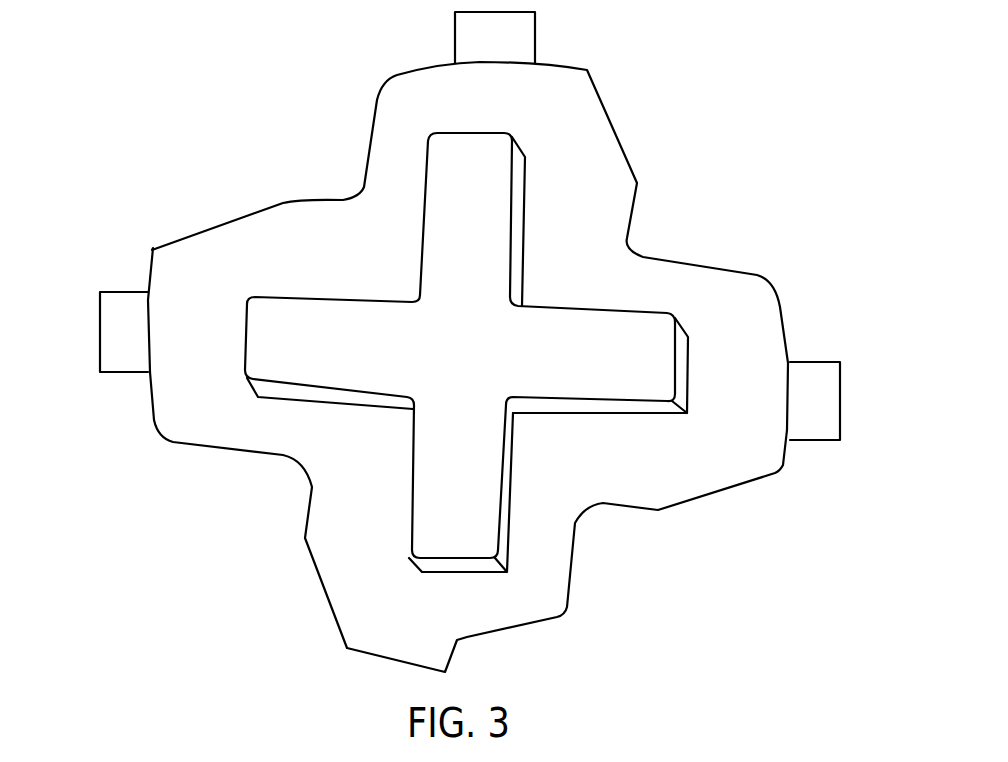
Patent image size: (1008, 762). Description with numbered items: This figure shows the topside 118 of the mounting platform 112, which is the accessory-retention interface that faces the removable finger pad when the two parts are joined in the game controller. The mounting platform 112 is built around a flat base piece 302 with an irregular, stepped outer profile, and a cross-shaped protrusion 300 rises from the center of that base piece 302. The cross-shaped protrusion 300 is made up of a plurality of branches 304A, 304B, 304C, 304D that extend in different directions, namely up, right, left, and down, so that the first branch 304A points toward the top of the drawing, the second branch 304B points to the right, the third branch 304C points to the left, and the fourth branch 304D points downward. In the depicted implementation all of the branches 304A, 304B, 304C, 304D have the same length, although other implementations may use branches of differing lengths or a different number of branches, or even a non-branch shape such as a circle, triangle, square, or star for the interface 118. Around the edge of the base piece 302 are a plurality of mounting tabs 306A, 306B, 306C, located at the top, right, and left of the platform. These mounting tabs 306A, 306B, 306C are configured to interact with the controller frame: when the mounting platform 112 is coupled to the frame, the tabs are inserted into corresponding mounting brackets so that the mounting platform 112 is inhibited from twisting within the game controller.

The mounting platform 112 is at (729, 91).
The topside 118 is at (481, 373).
The cross-shaped protrusion 300 is at (478, 132).
The base piece 302 is at (375, 120).
The branch 304A is at (513, 182).
The branch 304B is at (637, 402).
The branch 304C is at (267, 296).
The branch 304D is at (447, 562).
The mounting tab 306A is at (535, 33).
The mounting tab 306B is at (800, 362).
The mounting tab 306C is at (128, 291).